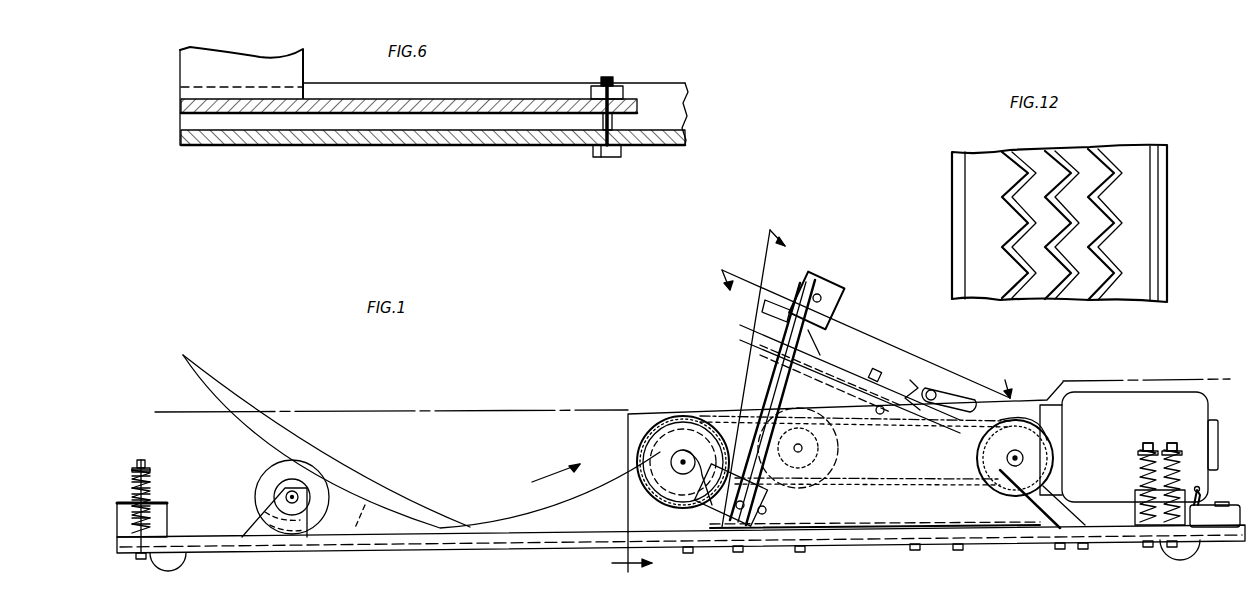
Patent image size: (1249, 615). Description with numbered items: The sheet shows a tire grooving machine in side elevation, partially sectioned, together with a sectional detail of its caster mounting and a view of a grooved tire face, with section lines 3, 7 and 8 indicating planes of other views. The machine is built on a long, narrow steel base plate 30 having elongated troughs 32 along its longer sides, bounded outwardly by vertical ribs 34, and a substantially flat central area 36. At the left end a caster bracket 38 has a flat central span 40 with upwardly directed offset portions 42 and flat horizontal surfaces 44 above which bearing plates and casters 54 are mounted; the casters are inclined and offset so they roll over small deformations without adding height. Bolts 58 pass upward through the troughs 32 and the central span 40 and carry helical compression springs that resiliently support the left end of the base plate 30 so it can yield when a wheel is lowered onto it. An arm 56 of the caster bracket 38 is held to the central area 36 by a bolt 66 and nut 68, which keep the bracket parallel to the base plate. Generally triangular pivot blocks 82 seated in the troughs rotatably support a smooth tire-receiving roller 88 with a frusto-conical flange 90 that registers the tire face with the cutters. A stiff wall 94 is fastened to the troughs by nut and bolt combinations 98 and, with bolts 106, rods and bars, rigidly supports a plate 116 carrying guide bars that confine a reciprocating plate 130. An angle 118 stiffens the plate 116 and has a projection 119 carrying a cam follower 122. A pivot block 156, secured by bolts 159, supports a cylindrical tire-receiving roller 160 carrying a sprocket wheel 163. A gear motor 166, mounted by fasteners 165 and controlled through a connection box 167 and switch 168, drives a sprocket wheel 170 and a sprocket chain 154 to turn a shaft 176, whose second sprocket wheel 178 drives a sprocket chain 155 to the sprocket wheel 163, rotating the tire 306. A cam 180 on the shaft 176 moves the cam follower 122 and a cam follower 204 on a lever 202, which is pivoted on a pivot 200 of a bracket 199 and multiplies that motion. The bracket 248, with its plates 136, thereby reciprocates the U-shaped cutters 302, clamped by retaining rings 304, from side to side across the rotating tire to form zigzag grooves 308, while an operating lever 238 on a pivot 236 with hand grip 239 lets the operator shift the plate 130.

In FIG. 1, the section line 3 is at (685, 441).
In FIG. 1, the section line 7 is at (703, 404).
In FIG. 1, the section line 8 is at (861, 334).
In FIG. 1, the base plate 30 is at (540, 550).
In FIG. 1, the troughs 32 is at (492, 552).
In FIG. 1, the ribs 34 is at (425, 548).
In FIG. 6, the central area 36 is at (465, 145).
In FIG. 6, the caster bracket 38 is at (178, 86).
In FIG. 6, the central span 40 is at (182, 106).
In FIG. 1, the upwardly directed offset portions 42 is at (168, 517).
In FIG. 6, the flat horizontal surfaces 44 is at (190, 66).
In FIG. 1, the flat horizontal surfaces 44 is at (165, 503).
In FIG. 1, the casters 54 is at (176, 568).
In FIG. 6, the arm 56 is at (480, 98).
In FIG. 1, the bolts 58 is at (140, 460).
In FIG. 6, the bolt 66 is at (618, 77).
In FIG. 6, the nut 68 is at (594, 86).
In FIG. 1, the pivot blocks 82 is at (275, 540).
In FIG. 1, the tire-receiving roller 88 is at (310, 490).
In FIG. 1, the frusto-conical flange 90 is at (315, 470).
In FIG. 1, the plate (wall) 94 is at (862, 512).
In FIG. 1, the nut and bolt combinations 98 is at (805, 552).
In FIG. 1, the bolts 106 is at (852, 405).
In FIG. 1, the plate 116 is at (762, 368).
In FIG. 1, the angle 118 is at (870, 444).
In FIG. 1, the projection 119 is at (850, 490).
In FIG. 1, the cam follower 122 is at (860, 462).
In FIG. 1, the plate 130 is at (765, 345).
In FIG. 1, the plates 136 is at (889, 276).
In FIG. 1, the sprocket chain 154 is at (935, 478).
In FIG. 1, the sprocket chain 155 is at (675, 414).
In FIG. 1, the pivot block 156 is at (690, 540).
In FIG. 1, the bolts 159 is at (695, 552).
In FIG. 1, the tire-receiving roller 160 is at (637, 466).
In FIG. 1, the sprocket wheel 163 is at (640, 460).
In FIG. 1, the fasteners 165 is at (965, 555).
In FIG. 1, the gear motor 166 is at (1137, 390).
In FIG. 1, the connection box 167 is at (1215, 514).
In FIG. 1, the switch 168 is at (1203, 505).
In FIG. 1, the sprocket wheel 170 is at (1050, 440).
In FIG. 1, the rotatable shaft 176 is at (805, 470).
In FIG. 1, the second sprocket wheel 178 is at (805, 485).
In FIG. 1, the cam 180 is at (792, 478).
In FIG. 1, the bracket 199 is at (738, 530).
In FIG. 1, the pivot 200 is at (672, 500).
In FIG. 1, the lever 202 is at (760, 403).
In FIG. 1, the cam follower 204 is at (740, 384).
In FIG. 1, the pivot 236 is at (888, 383).
In FIG. 1, the operating lever 238 is at (930, 382).
In FIG. 1, the hand grip 239 is at (978, 398).
In FIG. 1, the bracket 248 is at (812, 345).
In FIG. 1, the U-shaped cutter 302 is at (770, 300).
In FIG. 1, the retaining ring 304 is at (780, 320).
In FIG. 12, the tire 306 is at (1133, 150).
In FIG. 1, the tire 306 is at (350, 552).
In FIG. 12, the grooves 308 is at (1090, 300).